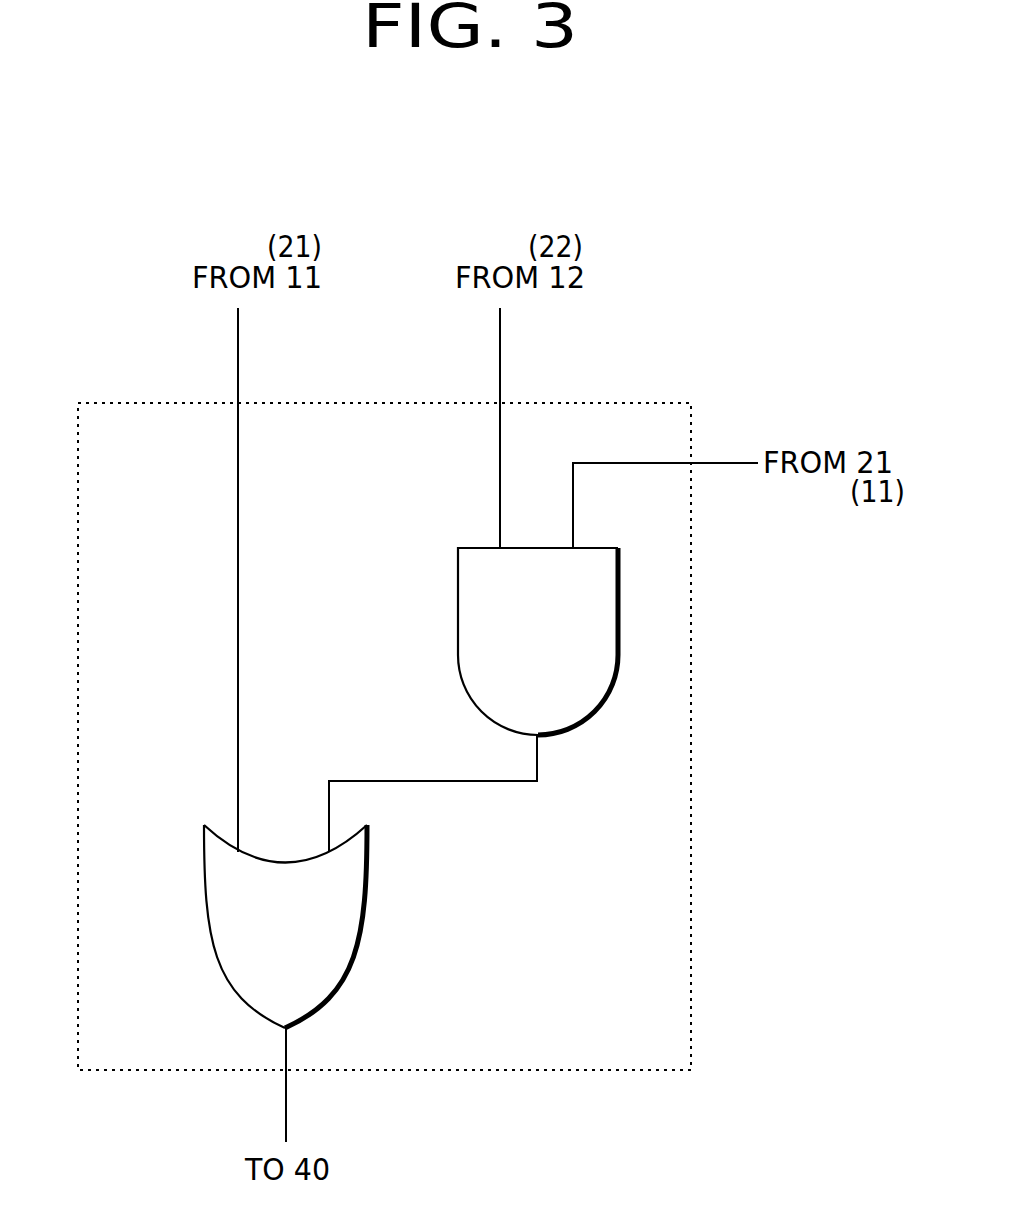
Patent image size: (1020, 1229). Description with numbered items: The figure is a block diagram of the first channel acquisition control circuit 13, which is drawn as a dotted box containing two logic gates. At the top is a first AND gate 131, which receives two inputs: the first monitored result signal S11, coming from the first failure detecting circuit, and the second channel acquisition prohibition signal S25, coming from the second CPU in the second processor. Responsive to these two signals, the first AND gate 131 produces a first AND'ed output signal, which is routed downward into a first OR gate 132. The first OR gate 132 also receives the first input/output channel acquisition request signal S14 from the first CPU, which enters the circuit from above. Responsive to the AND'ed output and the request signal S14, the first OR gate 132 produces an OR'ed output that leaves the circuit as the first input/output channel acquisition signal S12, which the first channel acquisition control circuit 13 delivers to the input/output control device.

The first channel acquisition control circuit 13 is at (692, 980).
The first AND gate 131 is at (458, 637).
The first OR gate 132 is at (367, 895).
The first input/output channel acquisition request signal S14 is at (238, 367).
The first monitored result signal S11 is at (500, 375).
The second channel acquisition prohibition signal S25 is at (731, 466).
The first input/output channel acquisition signal S12 is at (286, 1104).